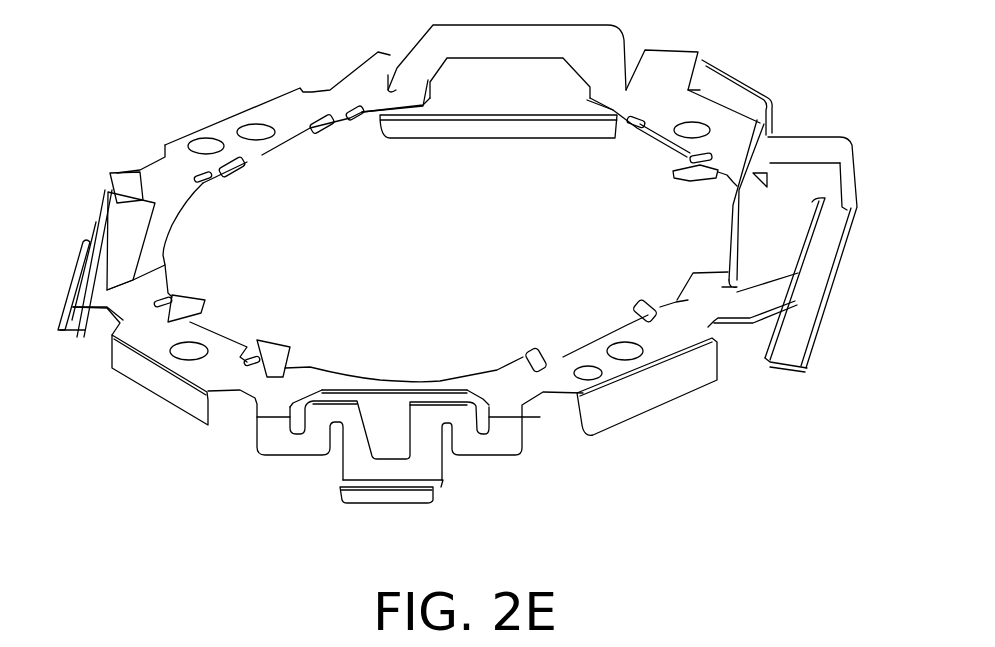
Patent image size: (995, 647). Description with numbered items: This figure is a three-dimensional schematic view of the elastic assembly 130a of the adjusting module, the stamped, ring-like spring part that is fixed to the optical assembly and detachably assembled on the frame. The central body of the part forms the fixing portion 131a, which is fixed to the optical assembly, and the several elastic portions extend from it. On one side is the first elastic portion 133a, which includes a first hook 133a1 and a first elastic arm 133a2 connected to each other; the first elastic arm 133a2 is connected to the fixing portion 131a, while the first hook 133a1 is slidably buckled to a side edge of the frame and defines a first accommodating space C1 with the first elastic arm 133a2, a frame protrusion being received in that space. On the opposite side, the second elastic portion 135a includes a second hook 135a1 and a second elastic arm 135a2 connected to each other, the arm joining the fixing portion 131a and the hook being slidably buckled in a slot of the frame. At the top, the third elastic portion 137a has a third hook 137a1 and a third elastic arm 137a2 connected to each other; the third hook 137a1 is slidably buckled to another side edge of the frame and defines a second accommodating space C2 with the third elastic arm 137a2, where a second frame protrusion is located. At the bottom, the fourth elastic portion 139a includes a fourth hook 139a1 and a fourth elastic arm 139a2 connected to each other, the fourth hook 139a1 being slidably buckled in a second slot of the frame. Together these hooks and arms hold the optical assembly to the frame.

The elastic assembly 130a is at (828, 528).
The fixing portion 131a is at (668, 338).
The first elastic portion 133a is at (862, 444).
The first hook 133a1 is at (793, 353).
The first elastic arm 133a2 is at (747, 312).
The second elastic portion 135a is at (180, 86).
The second hook 135a1 is at (60, 230).
The second elastic arm 135a2 is at (112, 215).
The third elastic portion 137a is at (591, 194).
The third hook 137a1 is at (498, 112).
The third elastic arm 137a2 is at (567, 48).
The fourth elastic portion 139a is at (562, 544).
The fourth hook 139a1 is at (430, 488).
The fourth elastic arm 139a2 is at (487, 447).
The first accommodating space C1 is at (797, 172).
The second accommodating space C2 is at (500, 92).